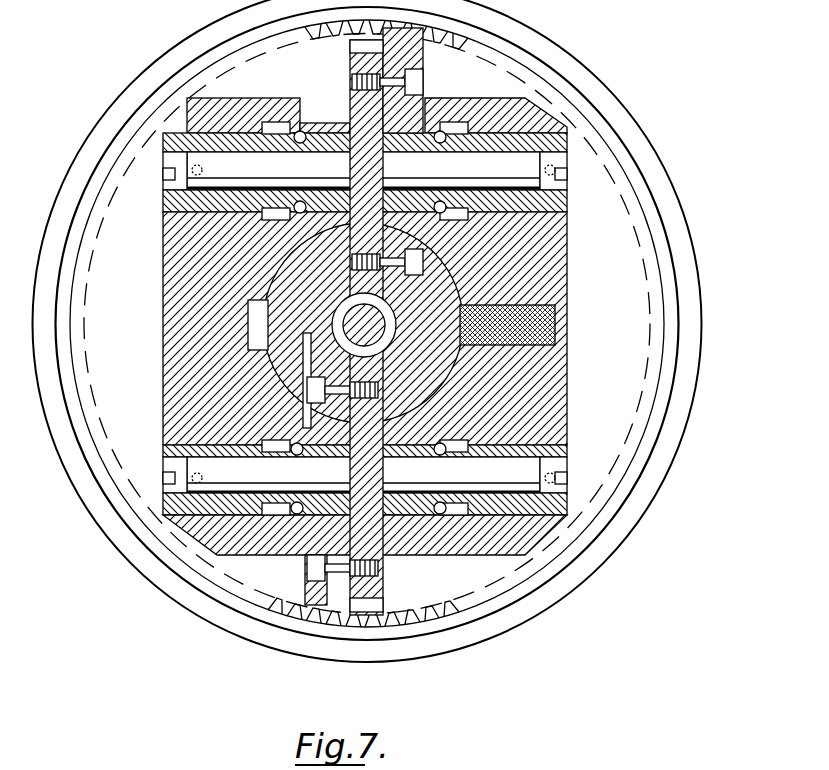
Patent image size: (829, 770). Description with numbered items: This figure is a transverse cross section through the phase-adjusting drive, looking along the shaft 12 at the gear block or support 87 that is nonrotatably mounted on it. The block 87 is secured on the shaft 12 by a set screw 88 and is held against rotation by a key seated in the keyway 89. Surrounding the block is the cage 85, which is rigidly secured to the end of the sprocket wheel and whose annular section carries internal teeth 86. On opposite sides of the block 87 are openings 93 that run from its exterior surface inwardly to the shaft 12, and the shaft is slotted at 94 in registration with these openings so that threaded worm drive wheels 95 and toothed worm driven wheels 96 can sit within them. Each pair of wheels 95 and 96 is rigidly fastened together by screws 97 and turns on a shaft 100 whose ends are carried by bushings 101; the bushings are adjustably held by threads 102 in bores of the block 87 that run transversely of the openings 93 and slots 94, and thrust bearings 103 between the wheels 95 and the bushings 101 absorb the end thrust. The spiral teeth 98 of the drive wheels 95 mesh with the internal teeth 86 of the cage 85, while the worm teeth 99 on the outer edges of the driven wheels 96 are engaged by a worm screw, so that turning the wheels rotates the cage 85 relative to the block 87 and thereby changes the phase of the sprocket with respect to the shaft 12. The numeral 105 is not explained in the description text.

The shaft 12 is at (445, 300).
The cage 85 is at (680, 414).
The internal teeth 86 is at (476, 61).
The gear block 87 is at (567, 380).
The set screw 88 is at (565, 323).
The keyway 89 is at (255, 321).
The openings 93 is at (437, 106).
The slots 94 is at (445, 396).
The worm drive wheels 95 is at (320, 585).
The worm driven wheels 96 is at (373, 591).
The screws 97 is at (385, 566).
The spiral teeth 98 is at (315, 608).
The worm teeth 99 is at (370, 607).
The shafts 100 is at (220, 465).
The bushings 101 is at (185, 543).
The threads 102 is at (163, 507).
The thrust bearings 103 is at (243, 552).
The hub bore 105 is at (345, 322).